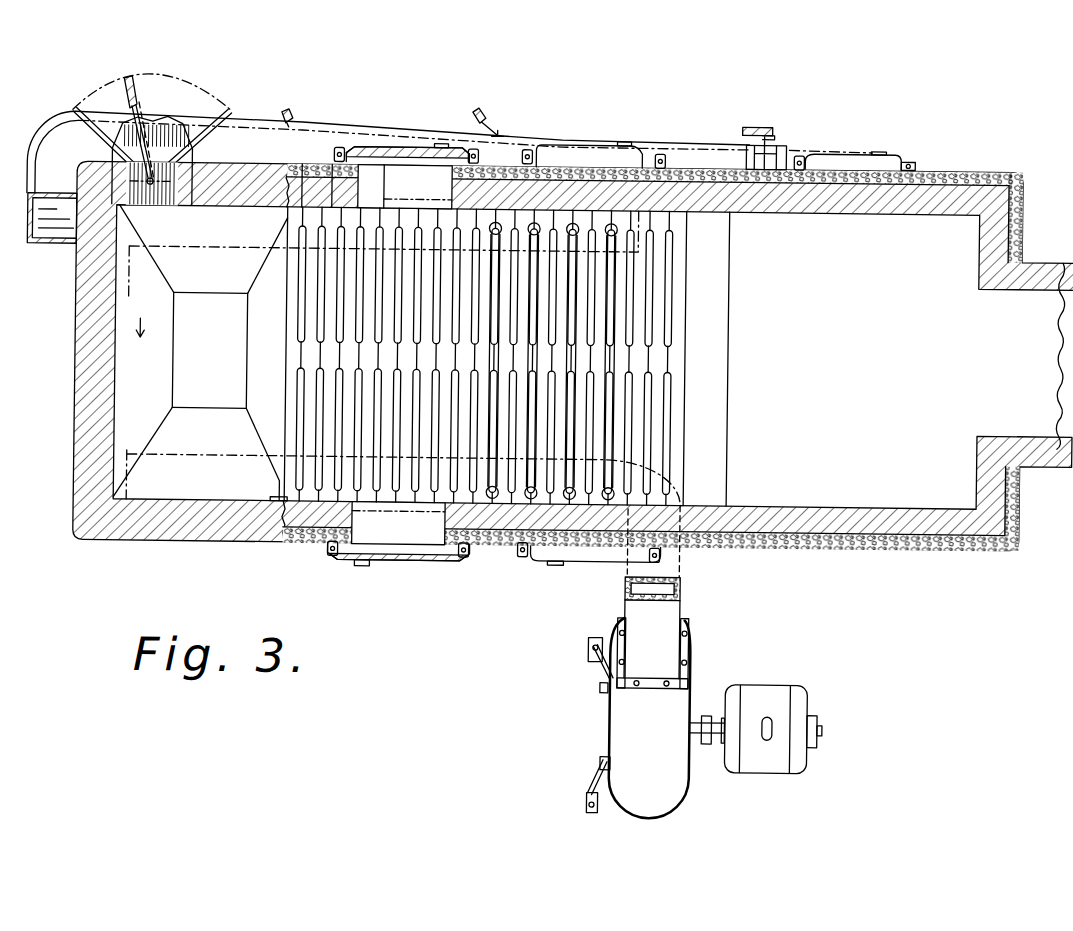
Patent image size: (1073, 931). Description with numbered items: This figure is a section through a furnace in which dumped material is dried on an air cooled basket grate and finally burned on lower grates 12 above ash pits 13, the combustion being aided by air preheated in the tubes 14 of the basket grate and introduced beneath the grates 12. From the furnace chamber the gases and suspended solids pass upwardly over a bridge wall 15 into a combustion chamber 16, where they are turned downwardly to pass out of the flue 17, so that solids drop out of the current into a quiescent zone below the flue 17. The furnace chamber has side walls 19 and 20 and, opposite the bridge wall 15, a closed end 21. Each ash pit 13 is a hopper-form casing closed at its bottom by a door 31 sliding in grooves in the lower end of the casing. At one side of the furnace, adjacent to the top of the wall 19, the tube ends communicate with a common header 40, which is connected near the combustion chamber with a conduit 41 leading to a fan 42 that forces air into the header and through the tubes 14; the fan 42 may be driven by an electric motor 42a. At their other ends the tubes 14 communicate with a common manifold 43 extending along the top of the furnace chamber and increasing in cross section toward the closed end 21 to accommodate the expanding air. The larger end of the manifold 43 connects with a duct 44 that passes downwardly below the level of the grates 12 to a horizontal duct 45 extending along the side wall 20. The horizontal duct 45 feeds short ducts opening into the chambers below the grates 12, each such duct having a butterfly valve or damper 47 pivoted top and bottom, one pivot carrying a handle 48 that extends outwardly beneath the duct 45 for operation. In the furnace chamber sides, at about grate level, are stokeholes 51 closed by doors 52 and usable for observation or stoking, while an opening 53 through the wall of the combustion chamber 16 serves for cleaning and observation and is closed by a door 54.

The lower grates 12 is at (330, 293).
The ash pits 13 is at (142, 315).
The tubes 14 is at (526, 475).
The bridge wall 15 is at (724, 355).
The combustion chamber 16 is at (810, 360).
The flue 17 is at (1035, 356).
The side wall 19 is at (320, 512).
The side wall 20 is at (312, 186).
The closed end 21 is at (90, 365).
The door 31 is at (200, 352).
The header 40 is at (240, 451).
The conduit 41 is at (677, 608).
The fan 42 is at (655, 719).
The electric motor 42a is at (772, 687).
The manifold 43 is at (186, 251).
The duct 44 is at (45, 251).
The horizontal duct 45 is at (242, 129).
The butterfly valve 47 is at (787, 152).
The handle 48 is at (123, 95).
The stokeholes 51 is at (402, 355).
The doors 52 is at (400, 150).
The opening 53 is at (931, 170).
The door 54 is at (855, 148).